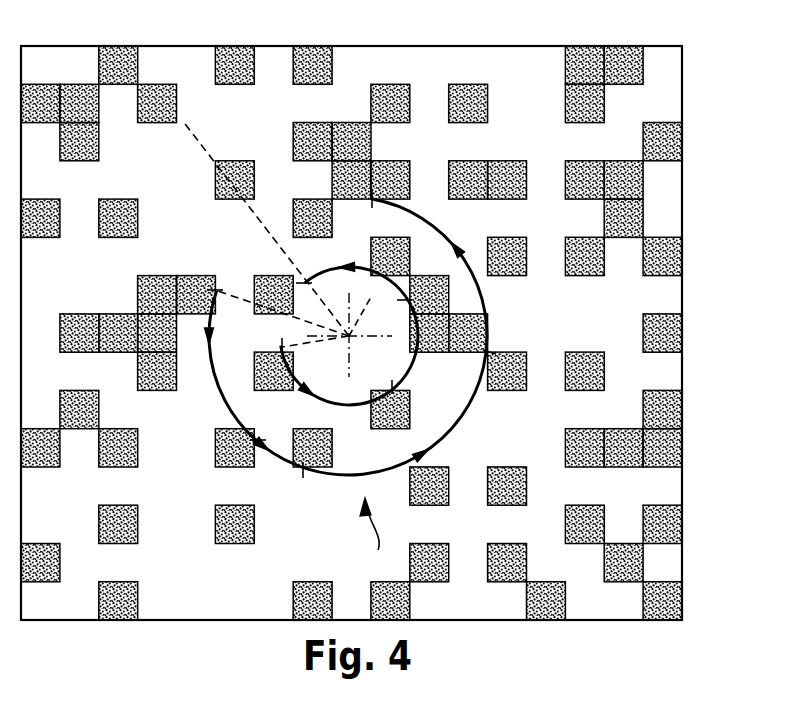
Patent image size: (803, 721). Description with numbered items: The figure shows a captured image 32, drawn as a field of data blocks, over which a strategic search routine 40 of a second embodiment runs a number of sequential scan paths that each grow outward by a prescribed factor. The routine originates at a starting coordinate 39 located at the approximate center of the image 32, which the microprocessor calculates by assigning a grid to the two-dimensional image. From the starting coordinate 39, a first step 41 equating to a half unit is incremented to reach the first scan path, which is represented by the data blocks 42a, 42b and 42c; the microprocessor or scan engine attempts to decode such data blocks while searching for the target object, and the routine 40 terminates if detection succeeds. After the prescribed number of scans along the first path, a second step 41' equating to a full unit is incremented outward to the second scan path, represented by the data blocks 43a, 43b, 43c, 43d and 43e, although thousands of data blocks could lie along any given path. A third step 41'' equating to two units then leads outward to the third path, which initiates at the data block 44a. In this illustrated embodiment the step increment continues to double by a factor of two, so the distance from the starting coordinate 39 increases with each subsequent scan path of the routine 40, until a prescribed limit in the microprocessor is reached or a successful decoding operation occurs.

The captured image 32 is at (628, 46).
The data block initiating the third scan path 44a is at (173, 116).
The starting coordinate 39 is at (349, 326).
The first step 41 is at (315, 361).
The second step 41' is at (283, 330).
The third step 41'' is at (265, 228).
The data block 42a is at (392, 387).
The data block 42b is at (410, 299).
The data block 42c is at (304, 283).
The data block 43a is at (214, 290).
The data block 43b is at (256, 441).
The data block 43c is at (303, 470).
The data block 43d is at (490, 352).
The data block 43e is at (372, 200).
The strategic search routine 40 is at (368, 537).